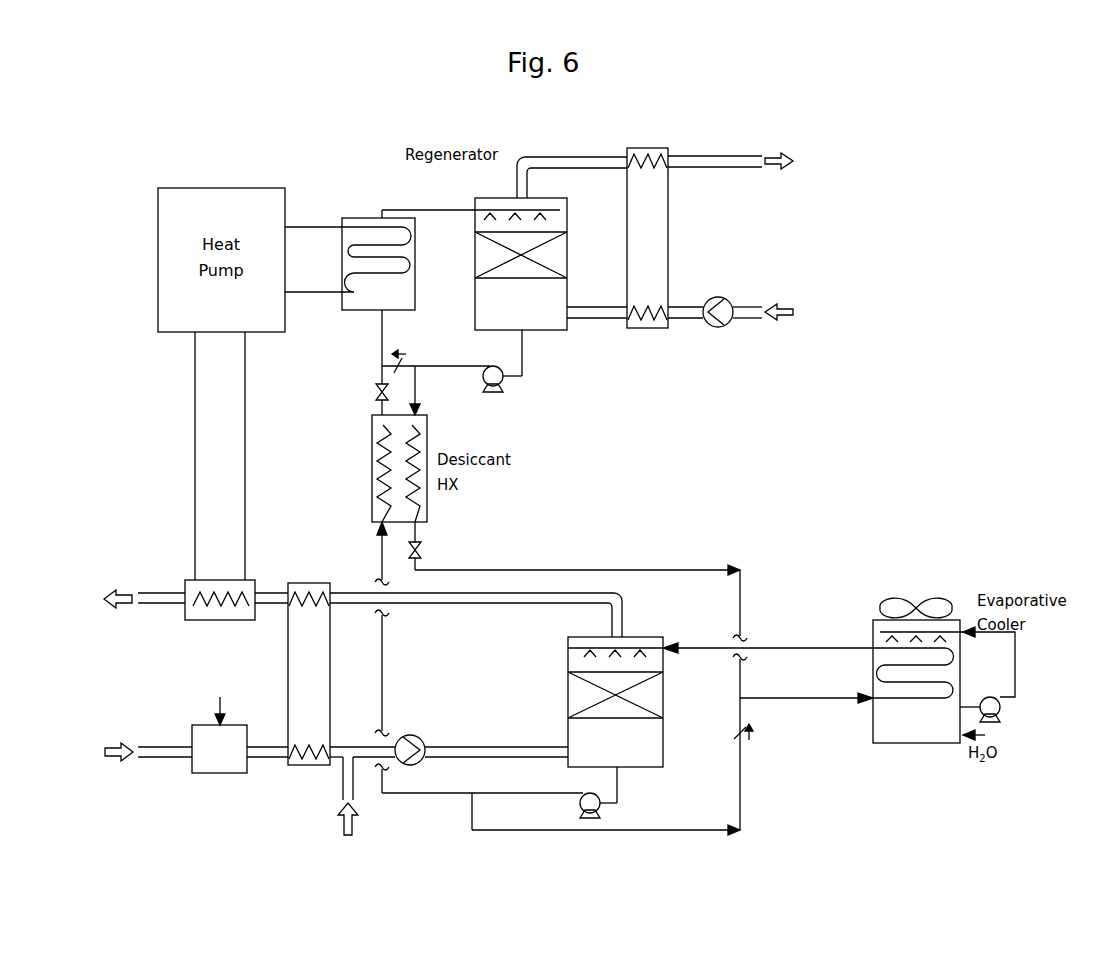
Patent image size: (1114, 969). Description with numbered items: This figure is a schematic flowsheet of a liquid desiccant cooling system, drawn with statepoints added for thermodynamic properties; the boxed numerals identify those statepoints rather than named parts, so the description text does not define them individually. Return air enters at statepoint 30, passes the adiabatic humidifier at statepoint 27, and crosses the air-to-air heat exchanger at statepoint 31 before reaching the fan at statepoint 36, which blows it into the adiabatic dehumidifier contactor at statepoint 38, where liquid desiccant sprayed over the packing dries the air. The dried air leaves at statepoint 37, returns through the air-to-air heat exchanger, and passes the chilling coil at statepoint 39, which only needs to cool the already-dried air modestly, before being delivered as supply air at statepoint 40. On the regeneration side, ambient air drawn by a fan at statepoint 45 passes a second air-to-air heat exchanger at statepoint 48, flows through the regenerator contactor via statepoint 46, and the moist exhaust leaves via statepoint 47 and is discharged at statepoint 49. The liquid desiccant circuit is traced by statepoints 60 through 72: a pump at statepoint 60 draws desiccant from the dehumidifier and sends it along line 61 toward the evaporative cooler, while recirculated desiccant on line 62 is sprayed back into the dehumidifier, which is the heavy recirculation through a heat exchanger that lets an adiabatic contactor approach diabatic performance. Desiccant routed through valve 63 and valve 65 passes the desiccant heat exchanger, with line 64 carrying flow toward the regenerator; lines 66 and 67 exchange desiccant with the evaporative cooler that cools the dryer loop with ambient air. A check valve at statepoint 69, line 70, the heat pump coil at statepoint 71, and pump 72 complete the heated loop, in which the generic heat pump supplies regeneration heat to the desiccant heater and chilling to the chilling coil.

The adiabatic humidifier 27 is at (209, 749).
The return air duct 30 is at (189, 760).
The air-to-air heat exchanger 31 is at (291, 650).
The return air duct to dehumidifier with fan 36 is at (441, 789).
The supply air duct from dehumidifier 37 is at (476, 615).
The dehumidifier 38 is at (557, 682).
The chilling coil 39 is at (230, 624).
The supply air duct 40 is at (178, 582).
The ambient air inlet with fan 45 is at (765, 329).
The regenerator outlet duct 46 is at (597, 294).
The regenerator exhaust duct 47 is at (563, 157).
The air-to-air heat exchanger 48 is at (623, 247).
The exhaust duct 49 is at (762, 142).
The desiccant pump 60 is at (619, 792).
The desiccant line 61 is at (606, 832).
The desiccant line 62 is at (463, 657).
The valve 63 is at (359, 396).
The desiccant line 64 is at (437, 390).
The valve 65 is at (574, 548).
The desiccant line to evaporative cooler 66 is at (806, 715).
The desiccant line from evaporative cooler 67 is at (720, 700).
The check valve 69 is at (436, 345).
The desiccant line 70 is at (357, 347).
The heat pump coil 71 is at (378, 244).
The pump 72 is at (521, 361).